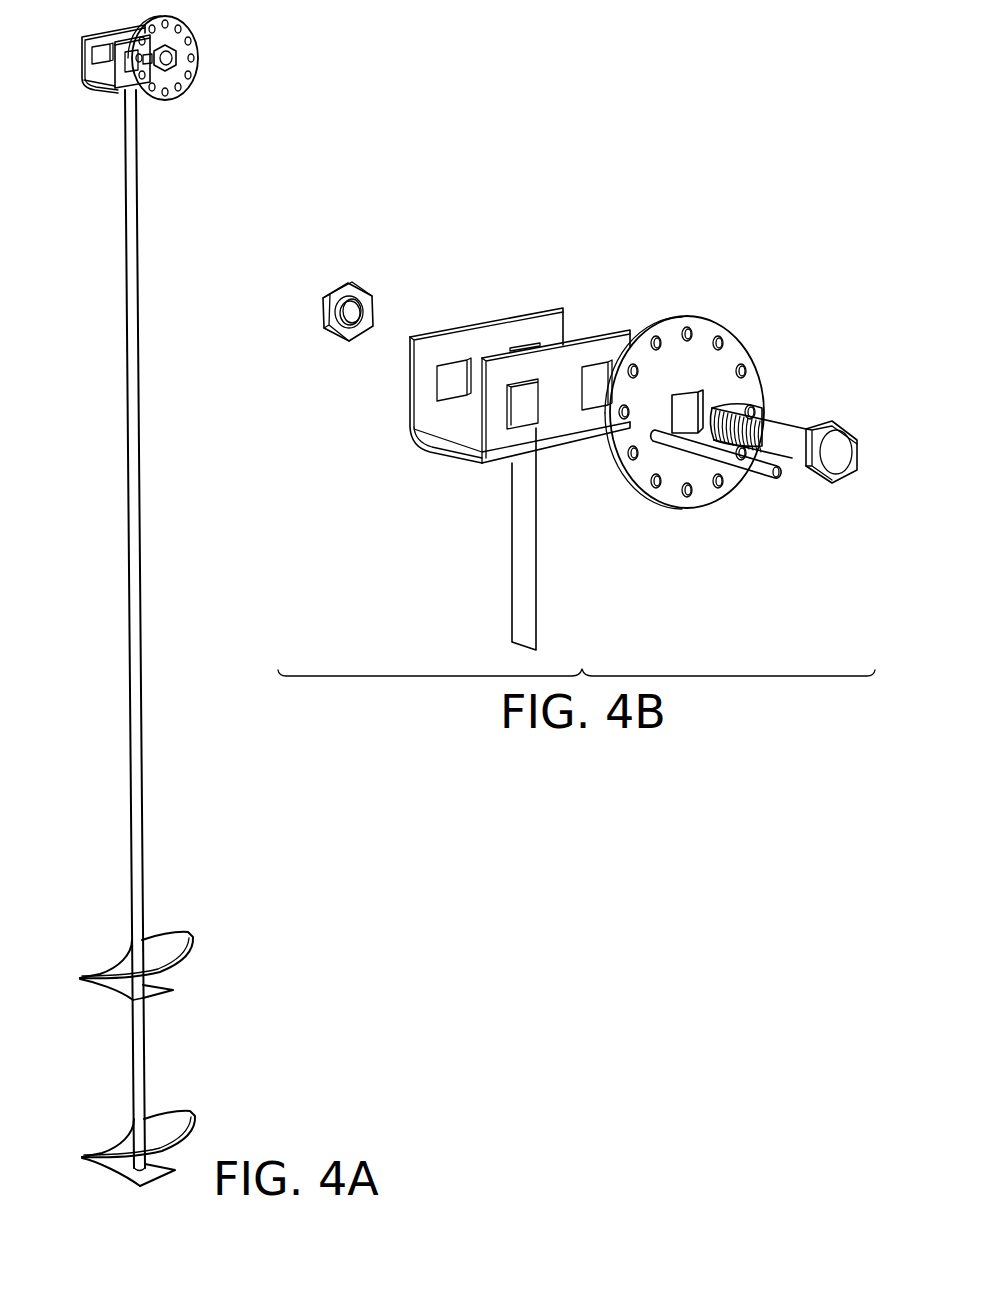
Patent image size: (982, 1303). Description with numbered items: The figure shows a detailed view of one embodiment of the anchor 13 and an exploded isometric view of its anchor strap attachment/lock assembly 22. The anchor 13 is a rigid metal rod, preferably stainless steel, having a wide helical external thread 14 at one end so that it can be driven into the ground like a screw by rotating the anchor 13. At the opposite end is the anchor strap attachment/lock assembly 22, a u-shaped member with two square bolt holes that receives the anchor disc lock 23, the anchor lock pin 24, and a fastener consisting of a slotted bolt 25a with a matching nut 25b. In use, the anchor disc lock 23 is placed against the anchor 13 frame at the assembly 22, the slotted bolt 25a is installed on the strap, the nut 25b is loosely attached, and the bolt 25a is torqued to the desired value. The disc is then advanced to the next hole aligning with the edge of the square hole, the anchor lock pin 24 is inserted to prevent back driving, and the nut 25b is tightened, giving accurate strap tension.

In FIG. 4A, the anchor 13 is at (124, 470).
In FIG. 4B, the anchor 13 is at (508, 567).
In FIG. 4A, the helical external thread 14 is at (185, 956).
In FIG. 4A, the anchor strap attachment/lock assembly 22 is at (82, 86).
In FIG. 4B, the anchor strap attachment/lock assembly 22 is at (405, 424).
In FIG. 4B, the anchor disc lock 23 is at (716, 320).
In FIG. 4B, the anchor lock pin 24 is at (704, 458).
In FIG. 4B, the slotted bolt 25a is at (786, 426).
In FIG. 4B, the nut 25b is at (366, 291).